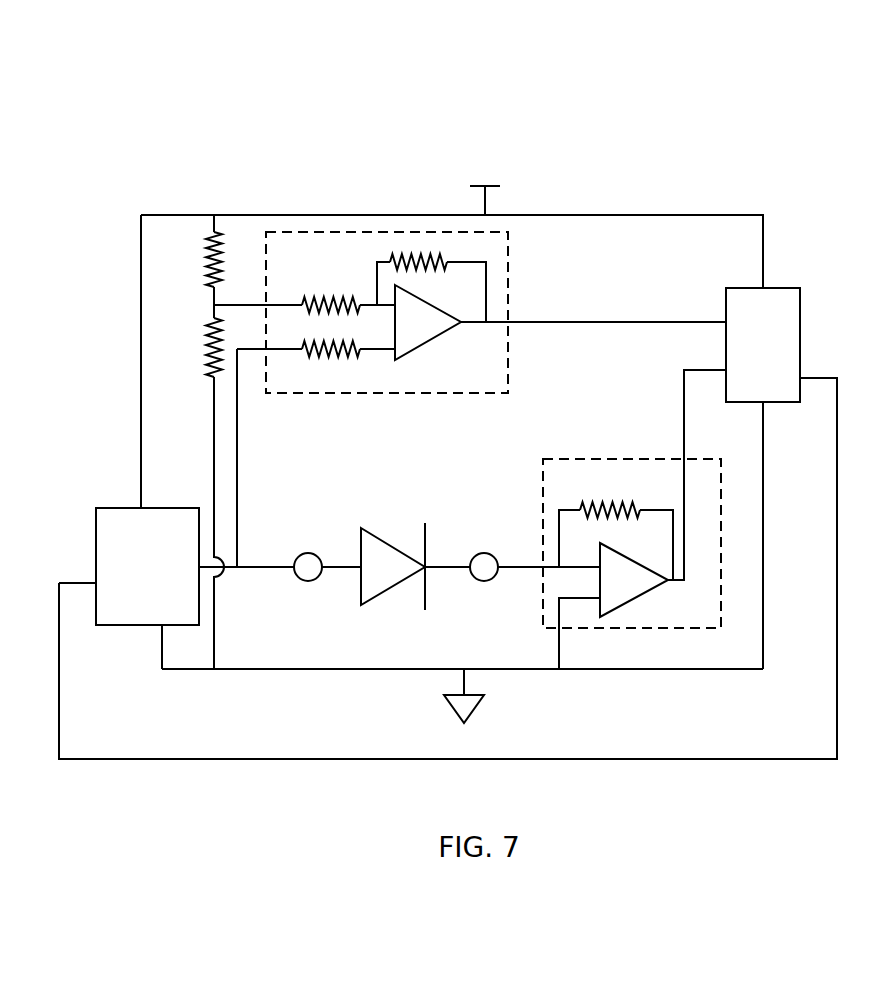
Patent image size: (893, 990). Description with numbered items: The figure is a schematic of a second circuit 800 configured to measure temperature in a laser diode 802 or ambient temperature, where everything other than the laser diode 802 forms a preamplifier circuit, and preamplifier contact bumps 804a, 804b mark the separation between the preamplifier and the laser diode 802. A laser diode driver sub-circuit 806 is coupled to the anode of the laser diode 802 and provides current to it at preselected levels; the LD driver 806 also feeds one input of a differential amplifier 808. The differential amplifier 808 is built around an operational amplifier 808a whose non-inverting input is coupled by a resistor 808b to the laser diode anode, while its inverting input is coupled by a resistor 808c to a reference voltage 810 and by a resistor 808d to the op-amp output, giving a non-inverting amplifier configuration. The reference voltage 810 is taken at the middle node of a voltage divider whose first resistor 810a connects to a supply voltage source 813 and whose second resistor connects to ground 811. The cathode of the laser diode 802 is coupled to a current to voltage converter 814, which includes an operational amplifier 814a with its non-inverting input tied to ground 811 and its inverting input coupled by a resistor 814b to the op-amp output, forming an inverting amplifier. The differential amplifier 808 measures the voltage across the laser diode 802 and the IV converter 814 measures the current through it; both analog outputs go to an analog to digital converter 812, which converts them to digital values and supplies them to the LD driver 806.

The second circuit 800 is at (676, 86).
The laser diode 802 is at (395, 525).
The preamplifier contact bump 804a is at (307, 553).
The preamplifier contact bump 804b is at (481, 553).
The laser diode driver sub-circuit 806 is at (120, 507).
The differential amplifier 808 is at (508, 252).
The operational amplifier 808a is at (431, 344).
The resistor 808b is at (208, 374).
The resistor 808c is at (305, 305).
The resistor 808d is at (419, 266).
The reference voltage 810 is at (212, 305).
The first resistor 810a is at (208, 283).
The ground 811 is at (517, 671).
The analog to digital converter 812 is at (777, 288).
The supply voltage source 813 is at (565, 215).
The current to voltage converter 814 is at (566, 459).
The operational amplifier 814a is at (635, 600).
The resistor 814b is at (598, 515).